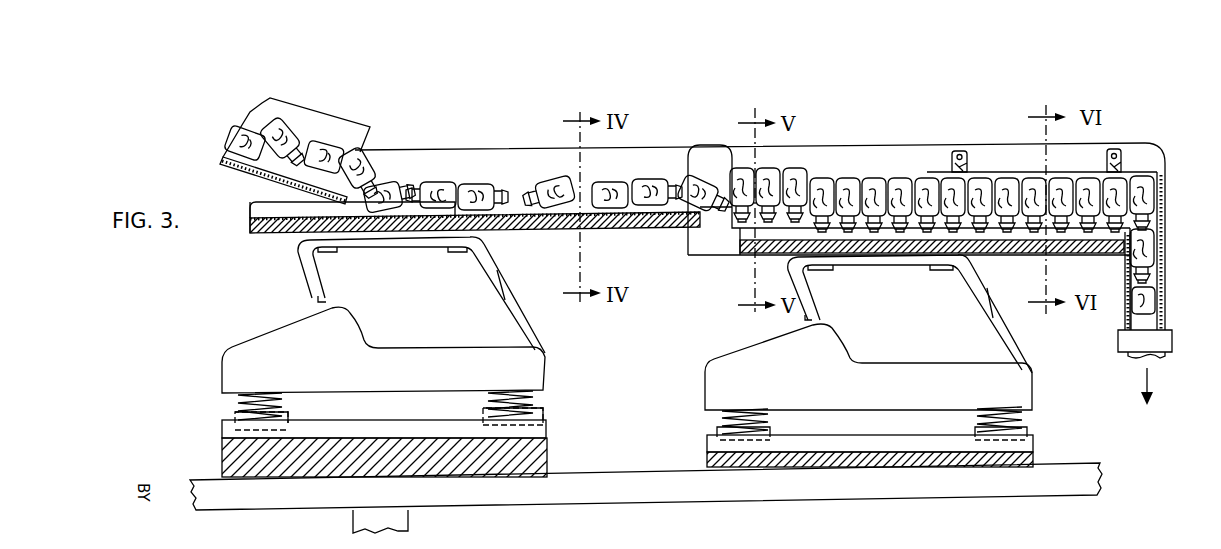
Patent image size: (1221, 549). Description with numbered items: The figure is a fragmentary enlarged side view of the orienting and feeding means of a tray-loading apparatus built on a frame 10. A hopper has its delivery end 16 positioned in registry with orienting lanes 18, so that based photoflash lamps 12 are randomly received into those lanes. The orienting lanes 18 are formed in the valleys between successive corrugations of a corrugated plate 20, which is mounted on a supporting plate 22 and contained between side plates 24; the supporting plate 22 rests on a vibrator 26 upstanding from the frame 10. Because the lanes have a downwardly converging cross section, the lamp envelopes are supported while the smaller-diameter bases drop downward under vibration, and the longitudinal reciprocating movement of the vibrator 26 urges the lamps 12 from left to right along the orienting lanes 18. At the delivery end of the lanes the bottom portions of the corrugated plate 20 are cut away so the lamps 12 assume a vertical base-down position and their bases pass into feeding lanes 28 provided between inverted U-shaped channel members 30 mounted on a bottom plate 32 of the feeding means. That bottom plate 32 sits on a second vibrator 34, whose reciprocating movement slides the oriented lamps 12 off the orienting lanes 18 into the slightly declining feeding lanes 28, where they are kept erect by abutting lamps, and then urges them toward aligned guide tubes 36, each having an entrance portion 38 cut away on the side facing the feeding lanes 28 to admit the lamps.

The frame 10 is at (601, 512).
The based photoflash lamps 12 is at (443, 188).
The delivery end 16 is at (362, 131).
The orienting lanes 18 is at (270, 204).
The corrugated plate 20 is at (250, 218).
The supporting plate 22 is at (272, 234).
The side plates 24 is at (536, 148).
The vibrator 26 is at (245, 347).
The feeding lanes 28 is at (742, 232).
The inverted U-shaped channel members 30 is at (765, 233).
The bottom plate 32 is at (1007, 254).
The second vibrator 34 is at (1024, 383).
The guide tubes 36 is at (1165, 282).
The entrance portion 38 is at (1128, 249).